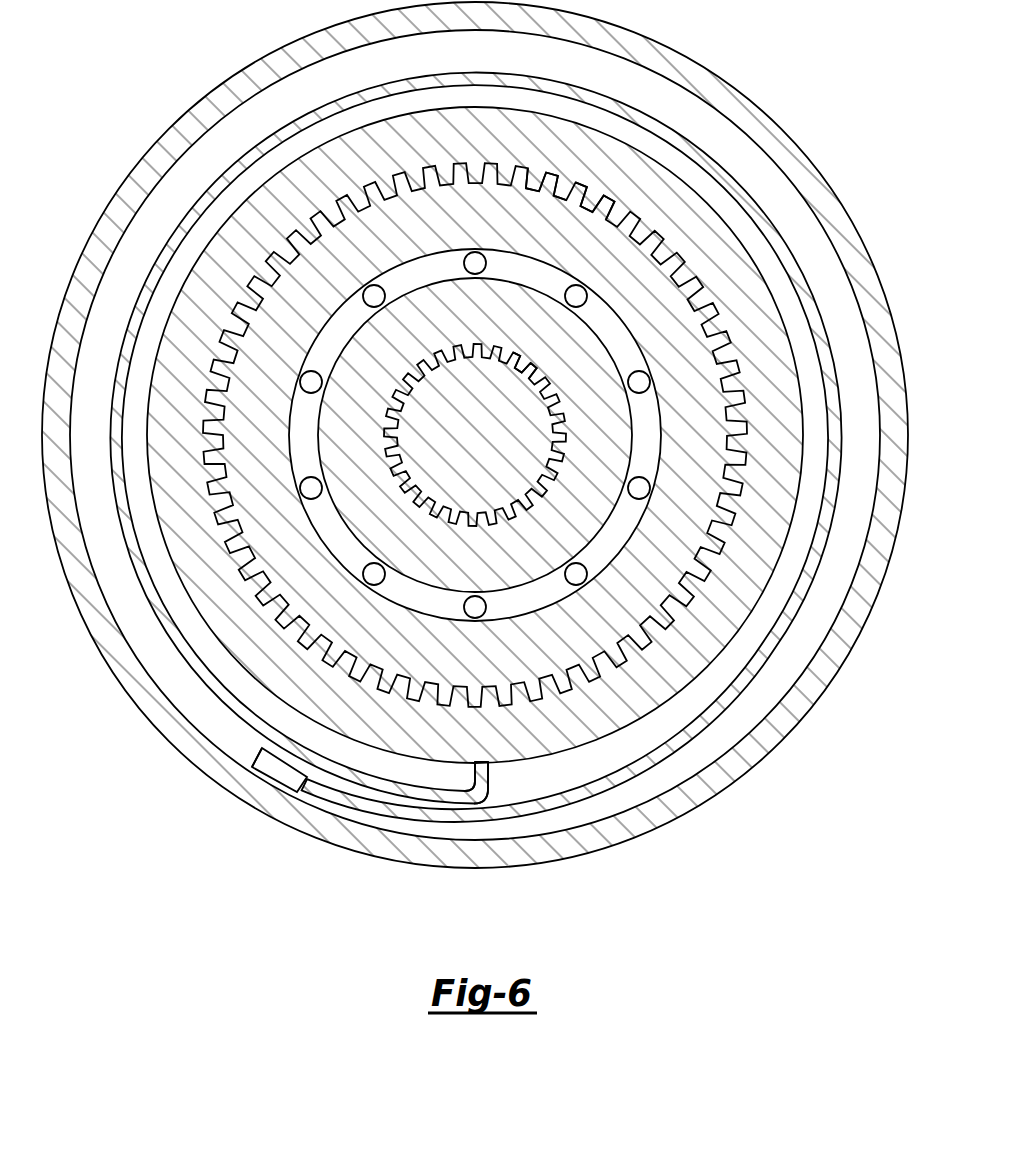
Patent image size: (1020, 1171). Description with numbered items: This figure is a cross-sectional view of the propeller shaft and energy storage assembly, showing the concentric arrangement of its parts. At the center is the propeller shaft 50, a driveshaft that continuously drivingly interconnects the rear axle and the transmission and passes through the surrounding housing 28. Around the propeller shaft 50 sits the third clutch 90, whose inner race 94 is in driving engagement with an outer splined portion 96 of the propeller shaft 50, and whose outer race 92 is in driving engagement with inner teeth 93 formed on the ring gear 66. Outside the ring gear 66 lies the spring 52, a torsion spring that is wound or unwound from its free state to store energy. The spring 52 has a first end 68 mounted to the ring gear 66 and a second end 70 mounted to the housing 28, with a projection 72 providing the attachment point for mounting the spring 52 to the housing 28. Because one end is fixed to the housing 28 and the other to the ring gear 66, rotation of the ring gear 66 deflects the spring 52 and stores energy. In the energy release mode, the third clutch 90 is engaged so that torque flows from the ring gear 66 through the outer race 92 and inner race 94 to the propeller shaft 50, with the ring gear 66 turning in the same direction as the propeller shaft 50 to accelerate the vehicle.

The housing 28 is at (140, 713).
The propeller shaft 50 is at (482, 465).
The spring 52 is at (168, 643).
The ring gear 66 is at (482, 130).
The first end 68 is at (480, 760).
The second end 70 is at (287, 780).
The projection 72 is at (264, 765).
The third clutch 90 is at (553, 655).
The outer race 92 is at (549, 193).
The inner teeth 93 is at (585, 196).
The inner race 94 is at (502, 330).
The outer splined portion 96 is at (525, 375).